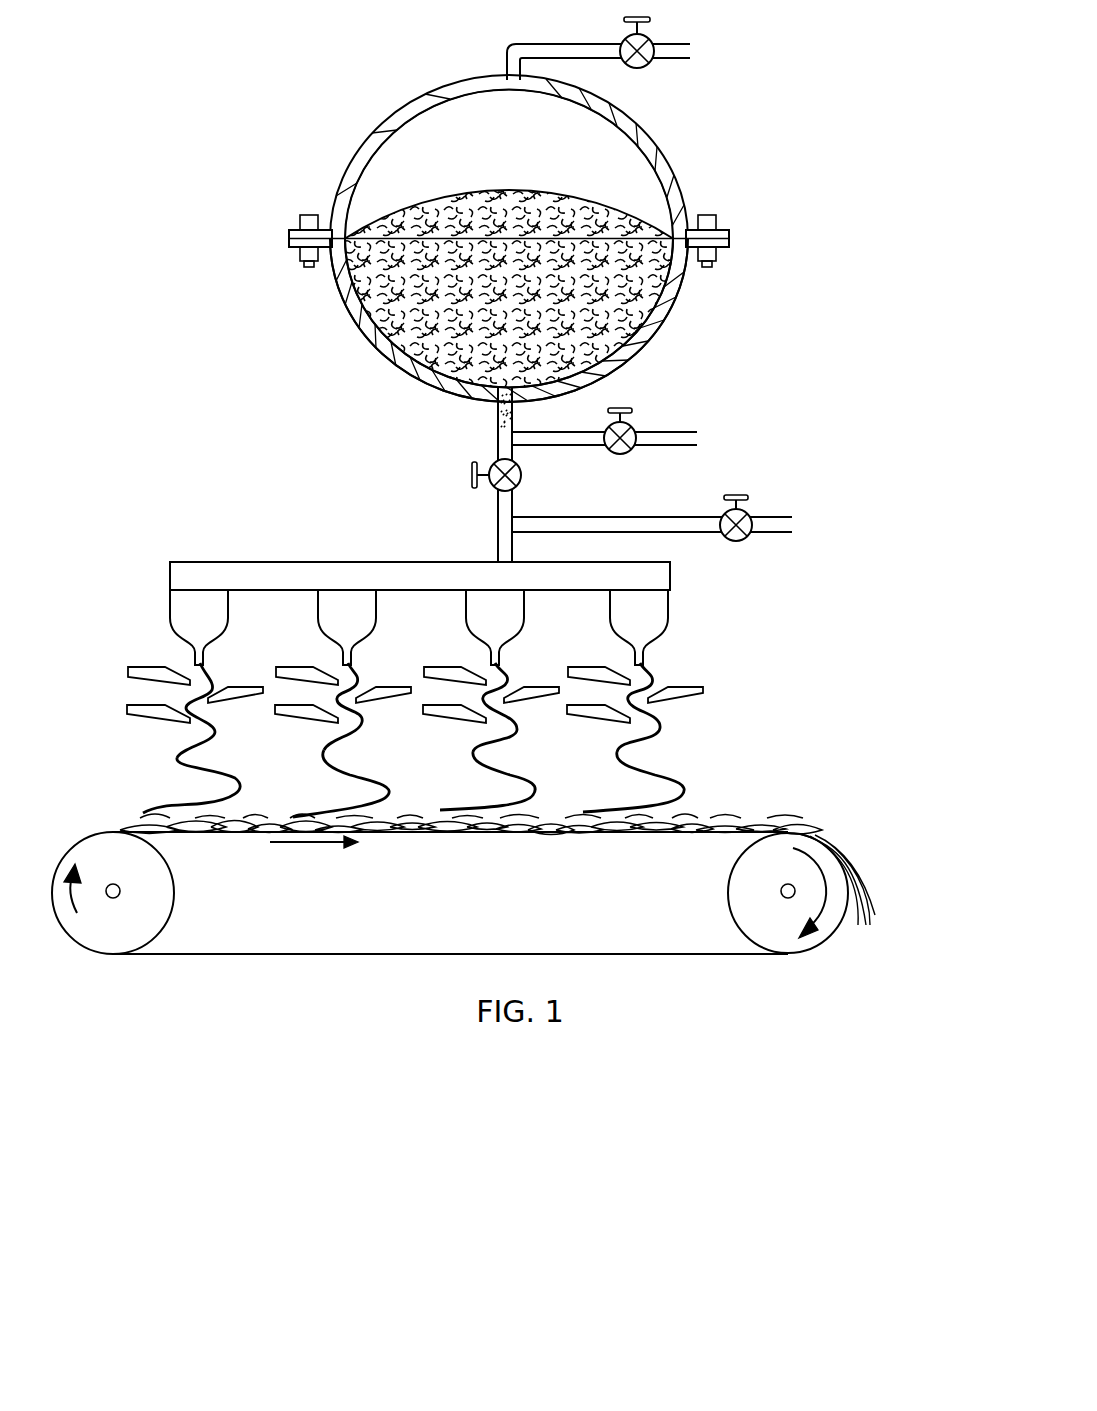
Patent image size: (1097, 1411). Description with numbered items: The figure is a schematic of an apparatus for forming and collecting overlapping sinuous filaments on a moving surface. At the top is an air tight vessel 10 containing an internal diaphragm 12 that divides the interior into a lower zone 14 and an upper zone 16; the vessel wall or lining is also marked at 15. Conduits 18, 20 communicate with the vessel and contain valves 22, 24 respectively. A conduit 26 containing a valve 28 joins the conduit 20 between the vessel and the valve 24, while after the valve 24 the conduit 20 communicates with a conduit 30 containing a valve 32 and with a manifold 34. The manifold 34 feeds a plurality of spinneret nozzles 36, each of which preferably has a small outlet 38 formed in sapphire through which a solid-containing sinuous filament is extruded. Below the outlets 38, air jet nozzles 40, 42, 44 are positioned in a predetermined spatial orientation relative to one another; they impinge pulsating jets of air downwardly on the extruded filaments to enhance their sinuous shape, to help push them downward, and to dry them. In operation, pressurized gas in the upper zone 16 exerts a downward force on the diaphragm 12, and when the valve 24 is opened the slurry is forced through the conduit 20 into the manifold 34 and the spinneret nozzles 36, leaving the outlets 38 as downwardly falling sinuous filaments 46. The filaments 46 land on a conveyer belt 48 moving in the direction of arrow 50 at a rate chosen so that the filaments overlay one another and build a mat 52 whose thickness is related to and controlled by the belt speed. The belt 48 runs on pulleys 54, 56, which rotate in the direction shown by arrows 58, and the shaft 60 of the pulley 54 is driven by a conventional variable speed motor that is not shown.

The air tight vessel 10 is at (675, 300).
The internal diaphragm 12 is at (578, 203).
The lower zone 14 is at (392, 338).
The vessel liner 15 is at (650, 338).
The upper zone 16 is at (500, 148).
The conduit 18 is at (522, 46).
The conduit 20 is at (498, 412).
The valve 22 is at (650, 66).
The valve 24 is at (521, 477).
The conduit 26 is at (572, 447).
The valve 28 is at (638, 424).
The conduit 30 is at (617, 517).
The valve 32 is at (722, 513).
The manifold 34 is at (347, 562).
The spinneret nozzles 36 is at (178, 627).
The small outlet 38 is at (205, 655).
The air jet nozzle 40 is at (152, 666).
The air jet nozzle 42 is at (263, 694).
The air jet nozzle 44 is at (163, 722).
The sinuous filaments 46 is at (323, 752).
The conveyer belt 48 is at (582, 840).
The arrow 50 is at (290, 845).
The mat 52 is at (775, 822).
The pulley 54 is at (175, 890).
The pulley 56 is at (728, 902).
The arrows 58 is at (800, 852).
The shaft 60 is at (120, 896).